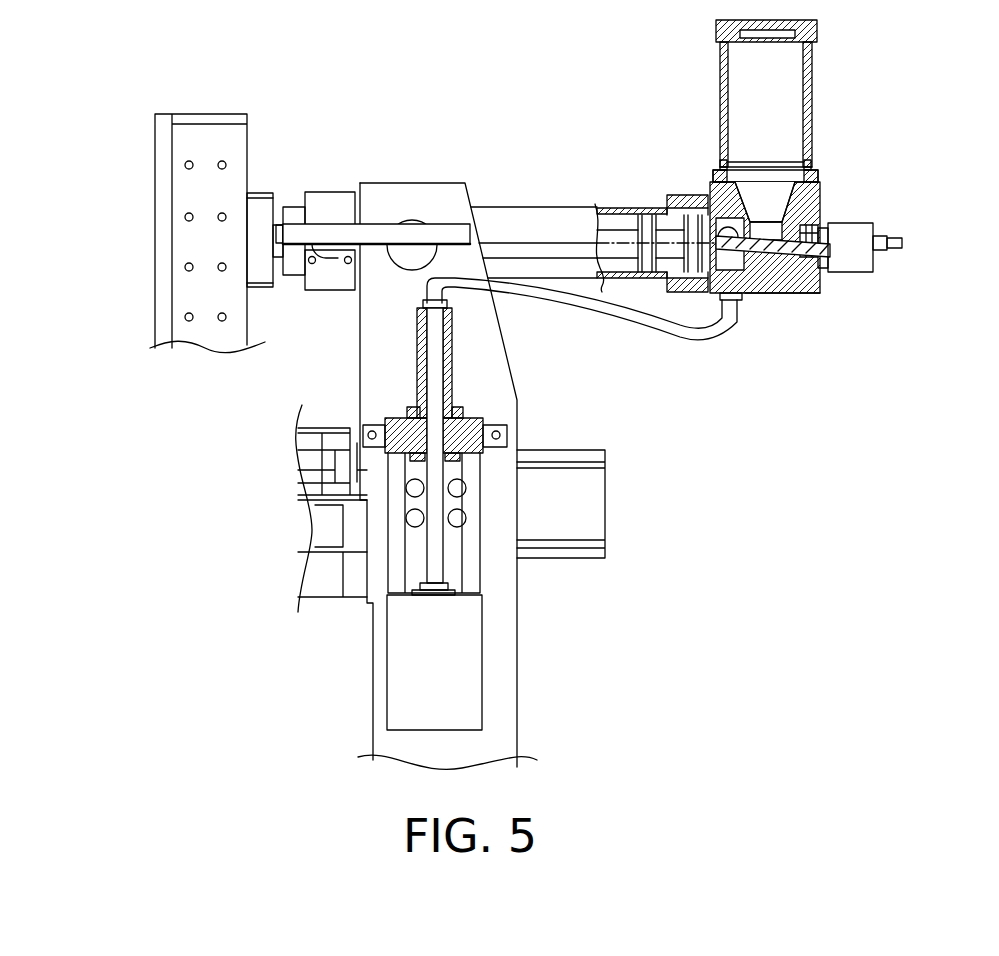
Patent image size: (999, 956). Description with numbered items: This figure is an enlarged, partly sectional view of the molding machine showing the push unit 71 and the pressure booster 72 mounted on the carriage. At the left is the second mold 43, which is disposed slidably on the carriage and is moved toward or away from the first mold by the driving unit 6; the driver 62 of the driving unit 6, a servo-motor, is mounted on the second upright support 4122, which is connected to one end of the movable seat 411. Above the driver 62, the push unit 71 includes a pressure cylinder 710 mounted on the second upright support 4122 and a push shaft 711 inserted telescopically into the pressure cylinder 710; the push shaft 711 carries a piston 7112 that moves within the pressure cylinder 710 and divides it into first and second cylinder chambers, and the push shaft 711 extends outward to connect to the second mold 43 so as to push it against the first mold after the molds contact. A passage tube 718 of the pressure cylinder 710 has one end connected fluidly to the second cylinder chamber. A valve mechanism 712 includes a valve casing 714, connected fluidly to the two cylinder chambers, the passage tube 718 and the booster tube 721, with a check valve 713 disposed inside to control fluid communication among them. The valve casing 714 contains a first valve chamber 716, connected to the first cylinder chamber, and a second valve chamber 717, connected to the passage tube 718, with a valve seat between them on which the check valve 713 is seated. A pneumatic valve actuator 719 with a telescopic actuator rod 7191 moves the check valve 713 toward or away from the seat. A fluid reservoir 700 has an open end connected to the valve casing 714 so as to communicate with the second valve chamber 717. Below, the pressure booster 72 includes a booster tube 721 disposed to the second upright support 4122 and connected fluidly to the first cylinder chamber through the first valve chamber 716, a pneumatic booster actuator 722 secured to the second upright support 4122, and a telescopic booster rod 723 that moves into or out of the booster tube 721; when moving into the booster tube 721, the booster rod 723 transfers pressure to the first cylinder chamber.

The second mold 43 is at (203, 138).
The passage tube 718 is at (378, 245).
The pressure cylinder 710 is at (548, 207).
The push shaft 711 is at (598, 214).
The piston 7112 is at (673, 228).
The fluid reservoir 700 is at (738, 64).
The push unit 71 is at (709, 221).
The valve casing 714 is at (803, 205).
The second valve chamber 717 is at (767, 227).
The valve mechanism 712 is at (848, 210).
The pneumatic valve actuator 719 is at (848, 273).
The telescopic actuator rod 7191 is at (808, 293).
The first valve chamber 716 is at (753, 293).
The check valve 713 is at (728, 292).
The booster tube 721 is at (452, 370).
The telescopic booster rod 723 is at (435, 562).
The pneumatic booster actuator 722 is at (398, 638).
The pressure booster 72 is at (442, 527).
The driving unit 6 is at (615, 502).
The driver 62 is at (610, 513).
The movable seat 411 is at (352, 513).
The second upright support 4122 is at (515, 688).